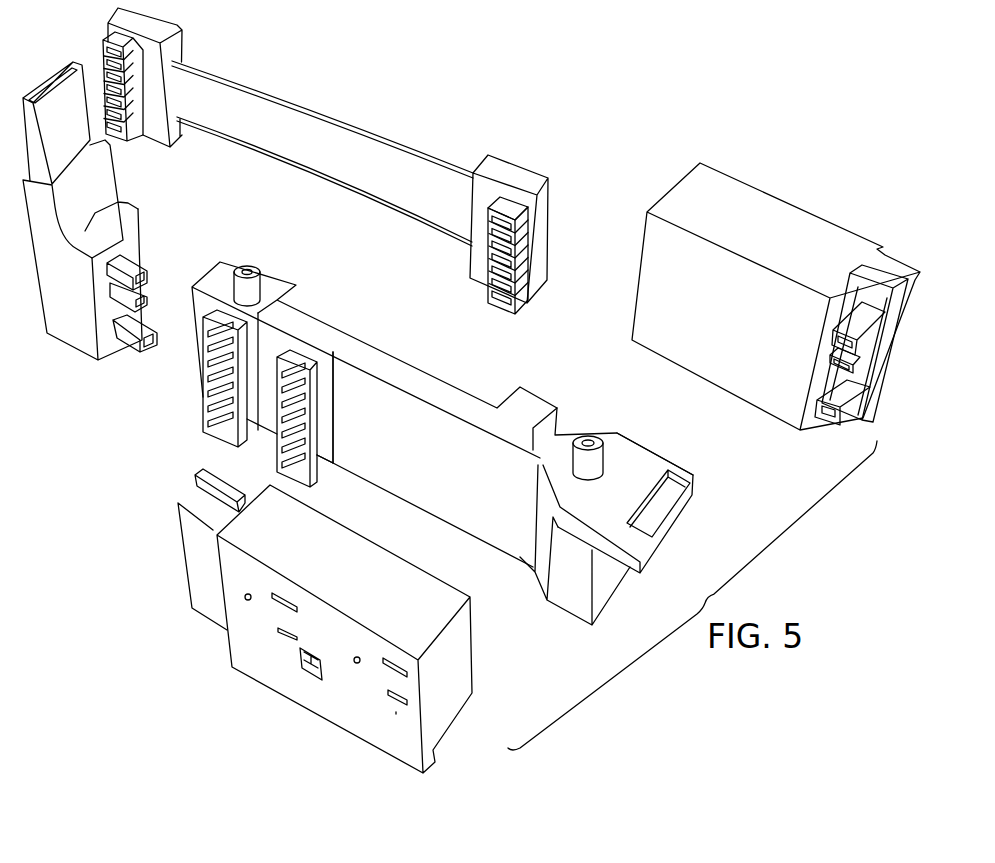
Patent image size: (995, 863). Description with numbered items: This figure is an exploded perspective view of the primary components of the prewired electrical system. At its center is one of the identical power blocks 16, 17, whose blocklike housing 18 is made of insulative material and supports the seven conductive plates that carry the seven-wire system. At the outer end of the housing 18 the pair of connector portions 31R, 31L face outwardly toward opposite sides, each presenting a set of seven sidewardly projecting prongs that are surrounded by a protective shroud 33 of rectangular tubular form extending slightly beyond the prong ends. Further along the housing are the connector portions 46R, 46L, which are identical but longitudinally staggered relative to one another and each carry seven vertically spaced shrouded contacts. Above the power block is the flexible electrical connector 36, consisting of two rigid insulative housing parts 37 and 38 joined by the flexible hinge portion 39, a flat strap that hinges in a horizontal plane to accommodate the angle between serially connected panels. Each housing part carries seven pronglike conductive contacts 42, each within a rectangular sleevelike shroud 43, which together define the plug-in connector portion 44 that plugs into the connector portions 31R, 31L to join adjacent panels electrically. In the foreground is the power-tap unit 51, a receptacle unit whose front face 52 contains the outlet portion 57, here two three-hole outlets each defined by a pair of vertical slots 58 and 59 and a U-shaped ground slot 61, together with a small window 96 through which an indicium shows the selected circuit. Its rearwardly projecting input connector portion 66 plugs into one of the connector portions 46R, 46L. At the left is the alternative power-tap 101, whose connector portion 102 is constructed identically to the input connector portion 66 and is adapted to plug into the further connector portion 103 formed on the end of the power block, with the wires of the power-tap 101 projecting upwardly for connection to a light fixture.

The power-tap 101 is at (106, 227).
The connector portion 102 is at (155, 273).
The connector portion 103 is at (200, 275).
The housing part 38 is at (160, 23).
The plug-in connector portion 44 is at (320, 166).
The pronglike conductive contact 42 is at (523, 204).
The sleevelike shroud 43 is at (507, 197).
The flexible hinge portion 39 is at (274, 100).
The flexible electrical connector 36 is at (322, 151).
The housing part 37 is at (517, 170).
The power block 16 is at (401, 418).
The power block 17 is at (401, 418).
The blocklike housing 18 is at (412, 377).
The protective shroud 33 is at (220, 315).
The connector portion 31L is at (207, 412).
The connector portion 31R is at (278, 262).
The connector portion 46L is at (331, 478).
The connector portion 46R is at (548, 397).
The power-tap unit 51 is at (549, 484).
The input connector portion 66 is at (857, 366).
The front face 52 is at (325, 641).
The window 96 is at (303, 673).
The U-shaped ground slot 61 is at (355, 657).
The vertical slot 58 is at (387, 658).
The vertical slot 59 is at (393, 693).
The outlet portion 57 is at (396, 714).